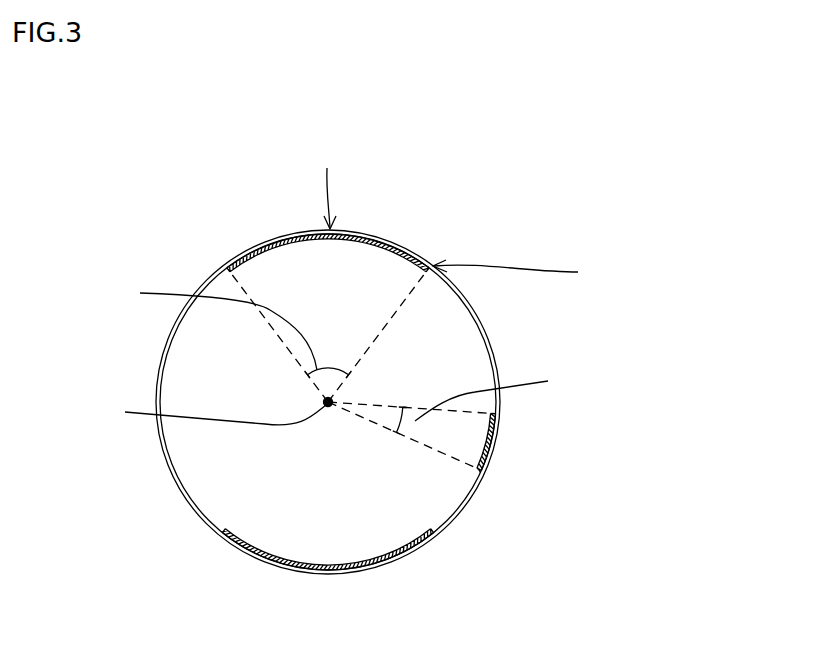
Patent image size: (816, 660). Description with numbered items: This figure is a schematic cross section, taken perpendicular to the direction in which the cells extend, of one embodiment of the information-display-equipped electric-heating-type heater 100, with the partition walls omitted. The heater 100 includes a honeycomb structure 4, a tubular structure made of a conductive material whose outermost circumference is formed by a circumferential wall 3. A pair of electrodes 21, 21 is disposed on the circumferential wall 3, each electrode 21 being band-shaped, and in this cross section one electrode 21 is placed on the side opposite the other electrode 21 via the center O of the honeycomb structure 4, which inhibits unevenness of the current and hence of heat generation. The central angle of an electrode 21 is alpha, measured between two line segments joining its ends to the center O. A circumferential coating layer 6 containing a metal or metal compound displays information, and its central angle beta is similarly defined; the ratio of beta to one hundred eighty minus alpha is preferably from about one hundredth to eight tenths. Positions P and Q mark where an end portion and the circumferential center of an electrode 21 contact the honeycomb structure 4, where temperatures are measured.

The information-display-equipped electric-heating-type heater 100 is at (745, 131).
The circumferential wall 3 is at (463, 507).
The honeycomb structure 4 is at (478, 320).
The electrode 21 is at (366, 231).
The circumferential coating layer 6 is at (498, 445).